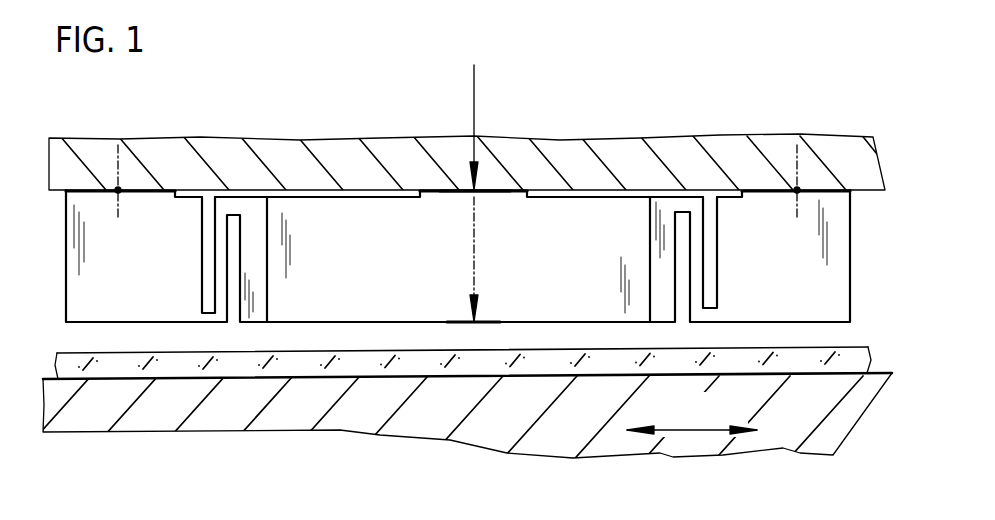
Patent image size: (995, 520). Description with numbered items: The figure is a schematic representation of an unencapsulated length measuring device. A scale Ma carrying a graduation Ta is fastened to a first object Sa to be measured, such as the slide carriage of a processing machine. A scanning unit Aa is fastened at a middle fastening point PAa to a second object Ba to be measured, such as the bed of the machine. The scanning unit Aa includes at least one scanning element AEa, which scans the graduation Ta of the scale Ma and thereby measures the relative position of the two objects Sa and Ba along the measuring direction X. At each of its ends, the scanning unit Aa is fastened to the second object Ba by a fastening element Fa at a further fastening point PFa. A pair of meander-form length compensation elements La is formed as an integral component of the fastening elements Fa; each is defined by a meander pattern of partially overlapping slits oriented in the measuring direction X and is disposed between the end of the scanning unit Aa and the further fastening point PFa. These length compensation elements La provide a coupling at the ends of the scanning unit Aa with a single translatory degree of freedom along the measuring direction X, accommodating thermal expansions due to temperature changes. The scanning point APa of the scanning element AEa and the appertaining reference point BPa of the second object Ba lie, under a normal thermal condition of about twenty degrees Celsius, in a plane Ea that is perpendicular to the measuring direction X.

The second object Ba is at (350, 150).
The further fastening point PFa is at (118, 190).
The scanning unit Aa is at (286, 212).
The reference point BPa is at (530, 142).
The middle fastening point PAa is at (475, 197).
The scanning element AEa is at (488, 318).
The scanning point APa is at (474, 290).
The meander-form length compensation element La is at (220, 268).
The fastening element Fa is at (83, 250).
The plane Ea is at (478, 90).
The graduation Ta is at (475, 397).
The scale Ma is at (275, 363).
The first object Sa is at (451, 433).
The measuring direction X is at (692, 415).